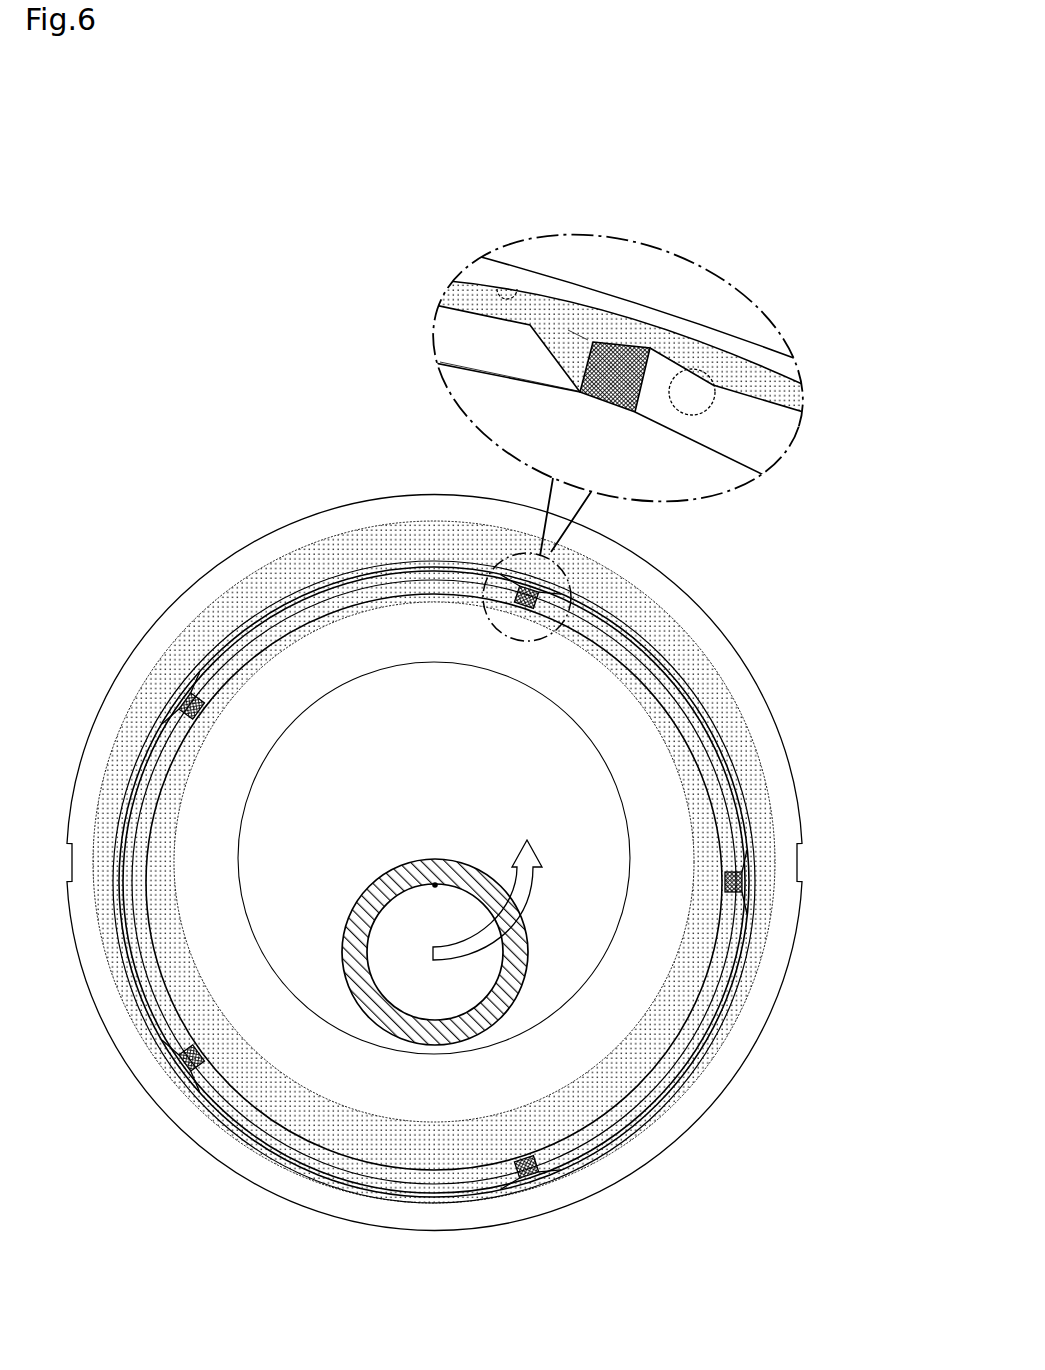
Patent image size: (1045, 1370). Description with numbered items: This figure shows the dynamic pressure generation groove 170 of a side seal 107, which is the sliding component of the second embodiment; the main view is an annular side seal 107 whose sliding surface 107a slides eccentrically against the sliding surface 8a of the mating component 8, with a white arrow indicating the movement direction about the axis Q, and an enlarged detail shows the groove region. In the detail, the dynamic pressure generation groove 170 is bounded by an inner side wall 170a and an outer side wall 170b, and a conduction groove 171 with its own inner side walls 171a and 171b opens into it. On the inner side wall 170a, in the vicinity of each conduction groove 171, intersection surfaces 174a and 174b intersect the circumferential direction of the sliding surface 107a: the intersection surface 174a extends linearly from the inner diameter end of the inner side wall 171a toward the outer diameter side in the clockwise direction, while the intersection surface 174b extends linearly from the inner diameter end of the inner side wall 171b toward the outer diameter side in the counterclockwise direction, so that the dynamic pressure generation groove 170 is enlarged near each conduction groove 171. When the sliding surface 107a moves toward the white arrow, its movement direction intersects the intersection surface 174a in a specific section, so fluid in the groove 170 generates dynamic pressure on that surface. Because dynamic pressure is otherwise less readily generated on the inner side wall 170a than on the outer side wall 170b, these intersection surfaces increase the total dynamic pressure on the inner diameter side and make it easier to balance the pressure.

The sliding component 8 is at (737, 617).
The sliding surface 8a is at (750, 697).
The side seal 107 is at (209, 647).
The sliding surface 107a is at (459, 337).
The dynamic pressure generation groove 170 is at (633, 306).
The inner side wall 170a is at (805, 407).
The outer side wall 170b is at (507, 286).
The conduction groove 171 is at (595, 418).
The inner side wall 171a is at (627, 414).
The inner side wall 171b is at (585, 404).
The intersection surface 174a is at (690, 368).
The intersection surface 174b is at (590, 340).
The rotation axis Q is at (435, 883).